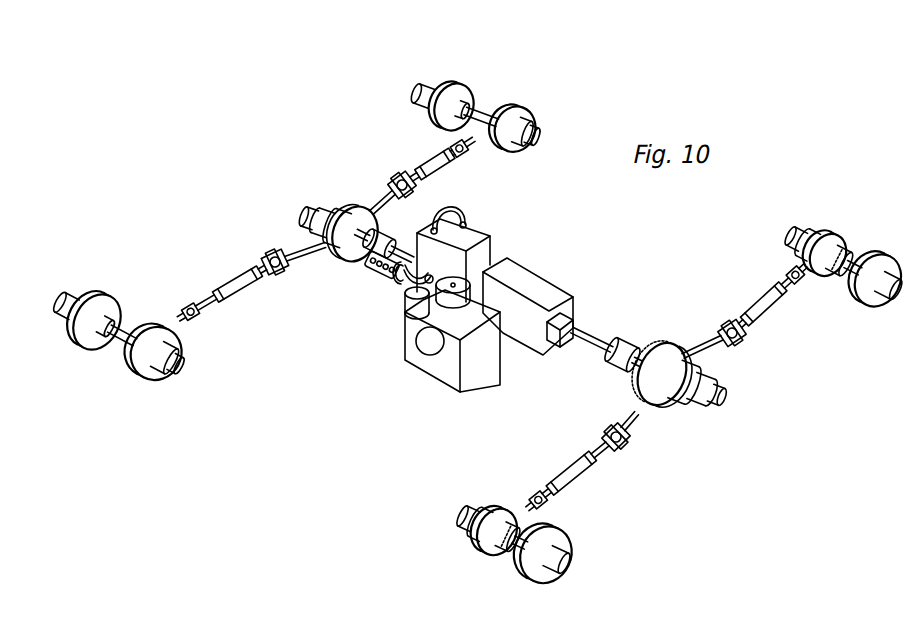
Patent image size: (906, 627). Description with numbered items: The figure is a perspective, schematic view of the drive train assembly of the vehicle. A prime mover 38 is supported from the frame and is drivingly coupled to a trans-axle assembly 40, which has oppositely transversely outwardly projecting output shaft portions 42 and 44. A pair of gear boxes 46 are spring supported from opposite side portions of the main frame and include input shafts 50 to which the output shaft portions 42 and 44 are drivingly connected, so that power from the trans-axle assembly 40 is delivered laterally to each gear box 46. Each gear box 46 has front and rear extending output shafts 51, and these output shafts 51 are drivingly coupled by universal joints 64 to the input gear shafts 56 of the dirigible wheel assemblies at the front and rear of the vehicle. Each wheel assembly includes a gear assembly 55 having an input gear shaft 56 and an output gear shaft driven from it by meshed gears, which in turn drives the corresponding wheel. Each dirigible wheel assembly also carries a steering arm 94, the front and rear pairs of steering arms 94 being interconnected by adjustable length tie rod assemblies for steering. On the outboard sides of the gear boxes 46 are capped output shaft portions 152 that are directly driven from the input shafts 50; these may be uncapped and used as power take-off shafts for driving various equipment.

The prime mover 38 is at (485, 240).
The trans-axle assembly 40 is at (553, 297).
The output shaft portion 42 is at (580, 340).
The output shaft portion 44 is at (407, 250).
The gear box 46 is at (332, 206).
The input shaft 50 is at (364, 252).
The output shaft 51 is at (314, 246).
The gear assembly 55 is at (497, 108).
The input gear shaft 56 is at (470, 138).
The universal joint 64 is at (427, 190).
The steering arm 94 is at (878, 254).
The capped output shaft portion 152 is at (310, 210).